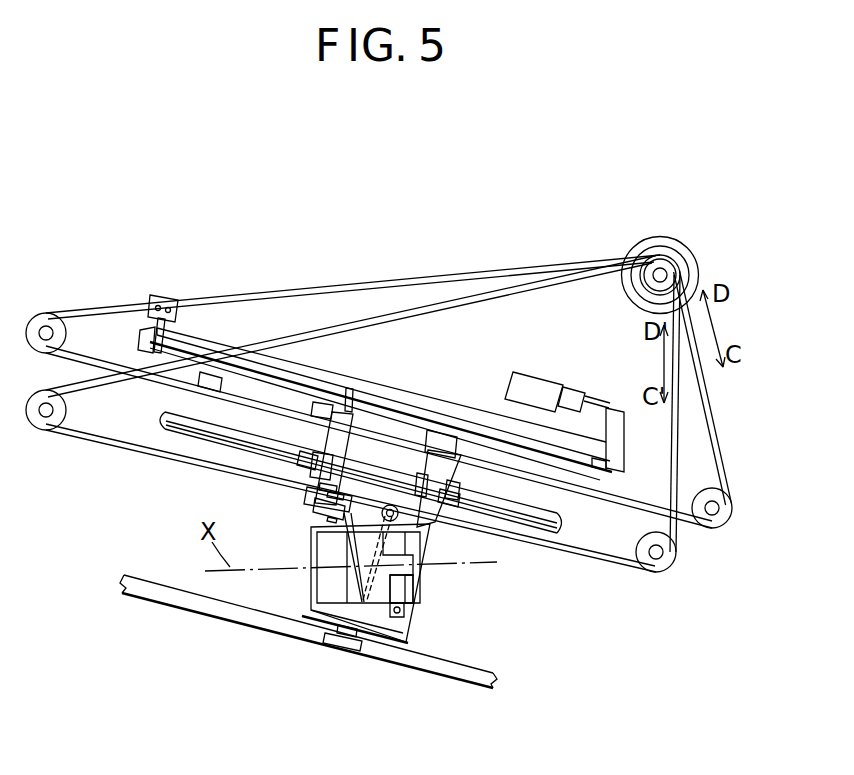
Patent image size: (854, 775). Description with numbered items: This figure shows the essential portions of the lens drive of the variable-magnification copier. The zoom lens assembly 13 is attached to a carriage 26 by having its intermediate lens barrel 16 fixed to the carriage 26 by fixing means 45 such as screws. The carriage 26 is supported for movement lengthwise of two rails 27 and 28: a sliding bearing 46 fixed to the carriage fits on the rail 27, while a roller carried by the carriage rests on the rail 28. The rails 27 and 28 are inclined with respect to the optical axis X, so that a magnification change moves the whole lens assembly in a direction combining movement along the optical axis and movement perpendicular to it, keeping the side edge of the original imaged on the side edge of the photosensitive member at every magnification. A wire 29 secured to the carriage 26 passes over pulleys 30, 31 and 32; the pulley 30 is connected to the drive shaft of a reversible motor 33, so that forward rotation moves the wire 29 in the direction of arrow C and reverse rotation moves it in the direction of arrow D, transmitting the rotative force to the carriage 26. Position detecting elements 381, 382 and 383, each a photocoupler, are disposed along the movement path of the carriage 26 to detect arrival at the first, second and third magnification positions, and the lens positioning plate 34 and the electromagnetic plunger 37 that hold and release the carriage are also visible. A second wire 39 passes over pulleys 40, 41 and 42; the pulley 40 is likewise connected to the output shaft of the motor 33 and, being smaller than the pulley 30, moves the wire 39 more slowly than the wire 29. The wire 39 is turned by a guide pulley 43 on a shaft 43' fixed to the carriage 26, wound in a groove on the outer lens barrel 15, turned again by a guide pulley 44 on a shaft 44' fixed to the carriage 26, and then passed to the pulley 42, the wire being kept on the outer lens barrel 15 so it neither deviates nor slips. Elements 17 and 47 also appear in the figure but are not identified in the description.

The zoom lens assembly 13 is at (328, 608).
The outer lens barrel 15 is at (373, 597).
The intermediate lens barrel 16 is at (398, 586).
The pen holder clamp 17 is at (413, 592).
The carriage 26 is at (403, 640).
The rail 27 is at (530, 517).
The rail 28 is at (465, 675).
The wire 29 is at (713, 407).
The pulley 30 is at (668, 258).
The pulley 31 is at (715, 520).
The pulley 32 is at (46, 313).
The reversible motor 33 is at (647, 237).
The lens positioning plate 34 is at (426, 395).
The electromagnetic plunger 37 is at (540, 372).
The wire 39 is at (680, 453).
The pulley 40 is at (672, 265).
The pulley 41 is at (658, 565).
The pulley 42 is at (40, 428).
The guide pulley 43 is at (392, 468).
The shaft 43' is at (422, 557).
The guide pulley 44 is at (299, 514).
The shaft 44' is at (316, 557).
The fixing means 45 is at (403, 613).
The sliding bearing 46 is at (313, 457).
The clamp piece 47 is at (350, 645).
The position detecting element 381 is at (330, 404).
The position detecting element 382 is at (455, 440).
The position detecting element 383 is at (198, 380).